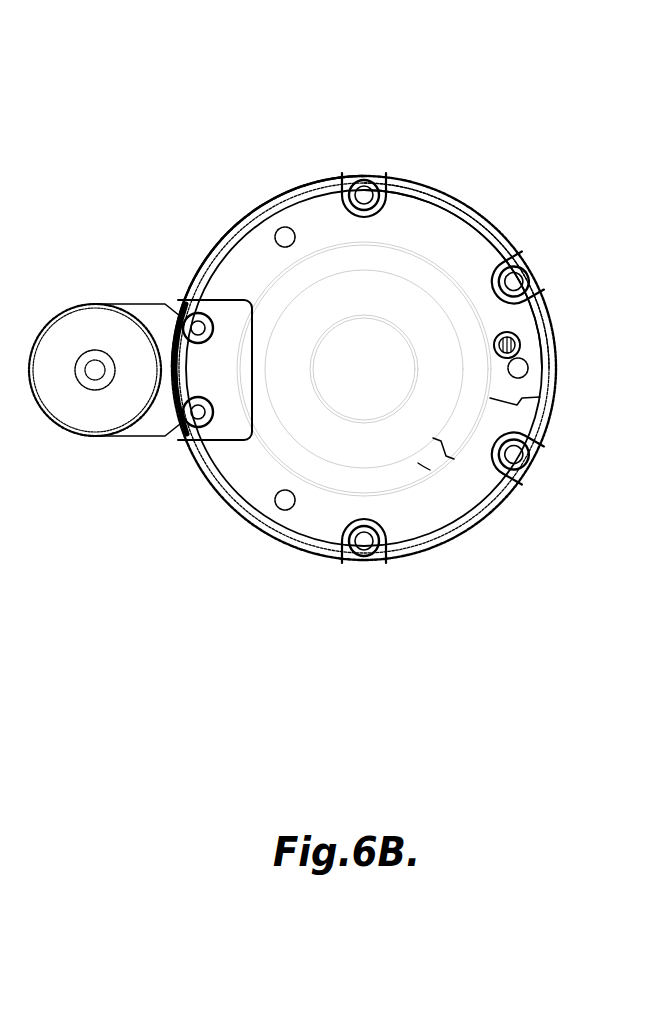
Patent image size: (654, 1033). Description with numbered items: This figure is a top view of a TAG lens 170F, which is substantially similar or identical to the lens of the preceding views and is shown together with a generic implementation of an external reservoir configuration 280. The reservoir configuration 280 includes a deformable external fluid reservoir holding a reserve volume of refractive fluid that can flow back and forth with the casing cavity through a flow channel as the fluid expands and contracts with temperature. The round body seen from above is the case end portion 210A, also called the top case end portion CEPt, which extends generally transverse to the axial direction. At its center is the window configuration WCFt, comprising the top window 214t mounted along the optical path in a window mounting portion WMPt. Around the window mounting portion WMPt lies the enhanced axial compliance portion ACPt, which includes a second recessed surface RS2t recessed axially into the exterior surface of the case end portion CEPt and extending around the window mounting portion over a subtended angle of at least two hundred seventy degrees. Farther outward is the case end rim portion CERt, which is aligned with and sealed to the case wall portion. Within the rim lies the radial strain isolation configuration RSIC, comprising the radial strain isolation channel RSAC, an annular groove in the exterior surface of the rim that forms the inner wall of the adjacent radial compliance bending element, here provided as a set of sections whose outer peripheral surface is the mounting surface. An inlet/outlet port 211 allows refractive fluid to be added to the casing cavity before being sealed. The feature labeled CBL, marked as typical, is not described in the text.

The TAG lens 170F is at (541, 116).
The case end portion 210A is at (268, 272).
The top case end portion CEPt is at (297, 189).
The radial strain isolation configuration RSIC is at (284, 47).
The radial strain isolation channel RSAC is at (477, 232).
The inlet/outlet port 211 is at (513, 343).
The case end rim portion CERt is at (522, 403).
The external reservoir configuration 280 is at (64, 427).
The top window 214t is at (333, 393).
The window mounting portion WMPt is at (350, 438).
The window configuration WCFt is at (218, 600).
The enhanced axial compliance portion ACPt is at (418, 463).
The second recessed surface RS2t is at (433, 457).
The casing bolt lug CBL is at (377, 557).